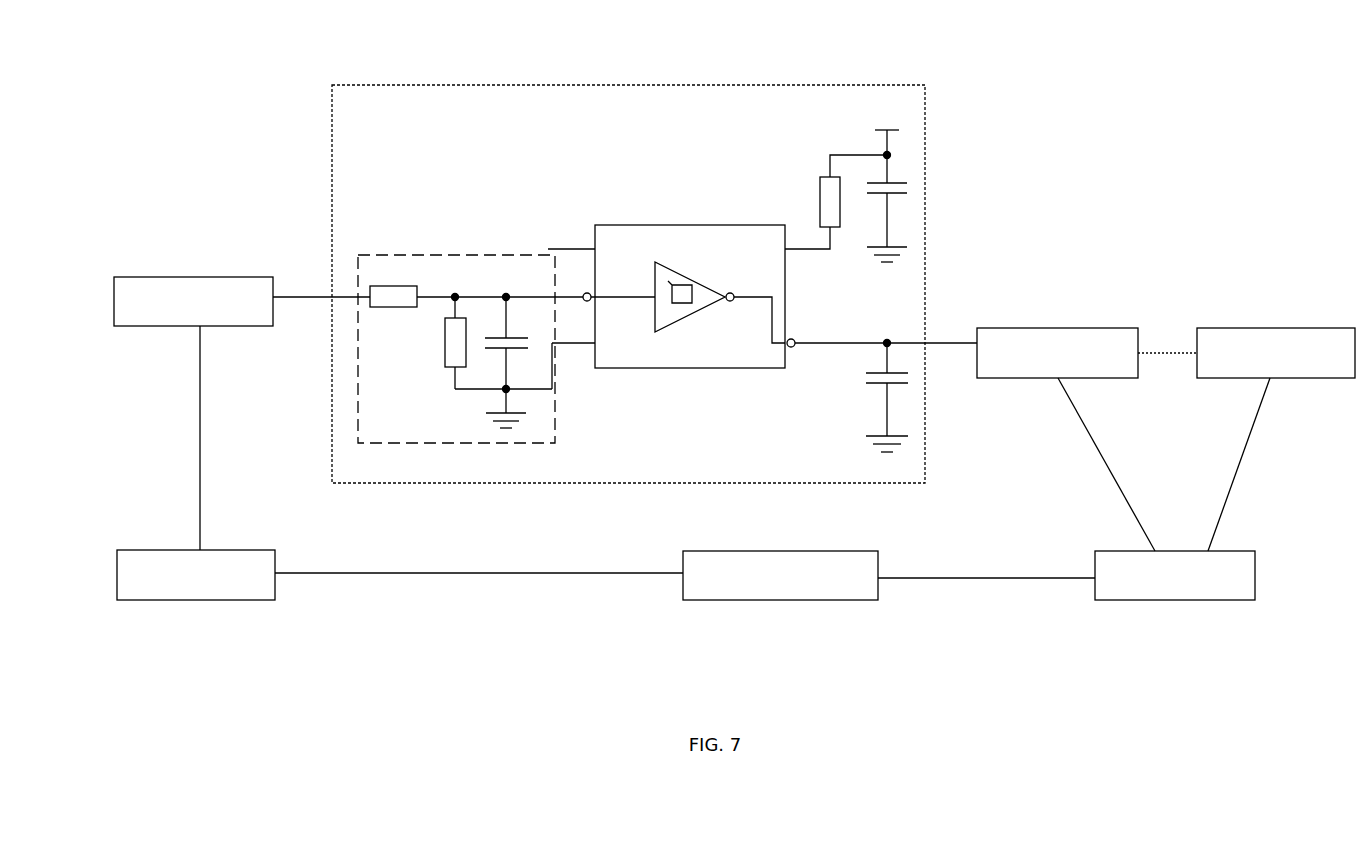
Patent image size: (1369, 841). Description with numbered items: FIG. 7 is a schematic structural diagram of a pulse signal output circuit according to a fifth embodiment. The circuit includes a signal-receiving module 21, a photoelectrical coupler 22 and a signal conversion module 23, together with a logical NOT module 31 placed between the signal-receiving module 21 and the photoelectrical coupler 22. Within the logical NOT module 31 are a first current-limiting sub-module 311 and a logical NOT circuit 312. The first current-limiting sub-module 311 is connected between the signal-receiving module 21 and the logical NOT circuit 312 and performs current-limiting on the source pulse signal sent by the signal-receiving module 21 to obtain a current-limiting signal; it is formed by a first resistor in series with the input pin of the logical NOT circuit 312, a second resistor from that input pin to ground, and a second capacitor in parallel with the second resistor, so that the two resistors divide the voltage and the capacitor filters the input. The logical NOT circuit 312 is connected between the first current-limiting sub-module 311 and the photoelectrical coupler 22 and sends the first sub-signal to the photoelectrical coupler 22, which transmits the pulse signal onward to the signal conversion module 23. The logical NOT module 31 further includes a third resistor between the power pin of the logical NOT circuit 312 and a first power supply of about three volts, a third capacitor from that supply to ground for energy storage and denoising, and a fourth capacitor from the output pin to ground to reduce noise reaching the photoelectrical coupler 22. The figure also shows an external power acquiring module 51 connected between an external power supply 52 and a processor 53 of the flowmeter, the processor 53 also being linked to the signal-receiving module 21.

The signal-receiving module 21 is at (187, 277).
The photoelectrical coupler 22 is at (1058, 328).
The signal conversion module 23 is at (1270, 328).
The logical NOT module 31 is at (628, 85).
The first current-limiting sub-module 311 is at (455, 255).
The logical NOT circuit 312 is at (660, 225).
The external power acquiring module 51 is at (780, 600).
The external power supply 52 is at (1172, 600).
The processor 53 is at (210, 600).